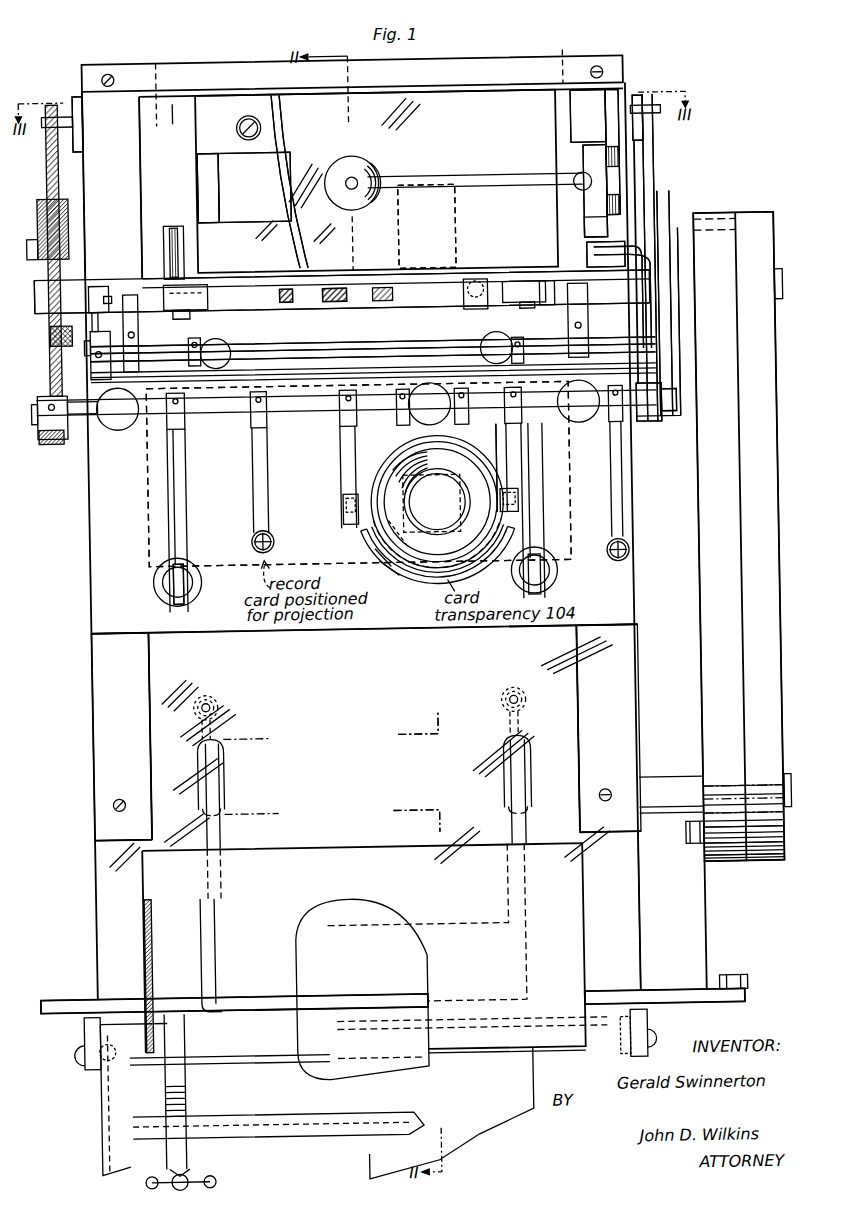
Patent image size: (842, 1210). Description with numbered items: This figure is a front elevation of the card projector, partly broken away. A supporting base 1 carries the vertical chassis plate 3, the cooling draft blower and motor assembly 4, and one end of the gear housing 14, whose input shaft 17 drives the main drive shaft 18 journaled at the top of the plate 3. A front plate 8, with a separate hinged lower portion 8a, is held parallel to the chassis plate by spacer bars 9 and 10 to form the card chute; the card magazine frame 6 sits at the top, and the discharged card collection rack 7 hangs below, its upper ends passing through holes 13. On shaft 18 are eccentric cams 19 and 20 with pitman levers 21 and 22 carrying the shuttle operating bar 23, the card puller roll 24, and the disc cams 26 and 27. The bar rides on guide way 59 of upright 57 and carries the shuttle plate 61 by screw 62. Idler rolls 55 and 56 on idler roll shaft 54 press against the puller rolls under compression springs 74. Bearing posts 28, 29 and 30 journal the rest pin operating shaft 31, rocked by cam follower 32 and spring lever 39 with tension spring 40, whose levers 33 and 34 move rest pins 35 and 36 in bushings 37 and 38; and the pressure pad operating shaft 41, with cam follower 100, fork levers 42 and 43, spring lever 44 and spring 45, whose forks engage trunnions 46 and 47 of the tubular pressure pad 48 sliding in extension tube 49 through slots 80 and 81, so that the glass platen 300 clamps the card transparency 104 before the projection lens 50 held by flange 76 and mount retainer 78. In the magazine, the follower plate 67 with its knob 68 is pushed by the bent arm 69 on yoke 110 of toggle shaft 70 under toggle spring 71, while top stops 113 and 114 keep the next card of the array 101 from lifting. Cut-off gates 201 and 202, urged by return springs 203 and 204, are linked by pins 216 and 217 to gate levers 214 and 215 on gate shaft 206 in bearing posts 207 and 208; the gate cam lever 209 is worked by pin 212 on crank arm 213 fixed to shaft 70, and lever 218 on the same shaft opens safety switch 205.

The supporting base 1 is at (668, 994).
The vertical chassis plate 3 is at (263, 266).
The cooling draft blower and motor assembly 4 is at (258, 1099).
The card magazine frame 6 is at (148, 124).
The card collection rack 7 is at (396, 838).
The front plate 8 is at (309, 335).
The front plate lower portion 8a is at (282, 630).
The spacer bar 9 is at (100, 654).
The spacer bar 10 is at (630, 662).
The holes 13 is at (528, 757).
The gear housing 14 is at (760, 866).
The input shaft 17 is at (665, 782).
The main drive shaft 18 is at (40, 282).
The eccentric cam 19 is at (44, 228).
The eccentric cam 20 is at (648, 220).
The pitman lever 21 is at (54, 162).
The pitman lever 22 is at (662, 132).
The shuttle operating bar 23 is at (650, 100).
The card puller roll 24 is at (190, 240).
The card rest pin control cam 26 is at (55, 330).
The pressure pad control cam 27 is at (668, 326).
The bearing post 28 is at (120, 425).
The bearing post 29 is at (417, 390).
The bearing post 30 is at (580, 425).
The card rest pin operating shaft 31 is at (302, 400).
The rest pin cam follower 32 is at (44, 392).
The pin operating lever 33 is at (185, 487).
The pin operating lever 34 is at (545, 514).
The card rest pin 35 is at (200, 580).
The card rest pin 36 is at (522, 580).
The pin bushing 37 is at (156, 580).
The pin bushing 38 is at (558, 580).
The rest pin closing spring lever 39 is at (266, 488).
The rest pin closing tension spring 40 is at (275, 536).
The pressure pad operating shaft 41 is at (484, 400).
The pressure pad fork lever 42 is at (358, 430).
The pressure pad fork lever 43 is at (509, 428).
The pressure pad closing spring lever 44 is at (613, 483).
The pressure pad closing tension spring 45 is at (608, 551).
The pressure pad stud 46 is at (402, 462).
The pressure pad stud 47 is at (503, 462).
The pressure pad 48 is at (447, 438).
The extension tube 49 is at (432, 442).
The projection lens 50 is at (380, 546).
The idler roll shaft 54 is at (362, 296).
The card puller idler roll 55 is at (195, 313).
The card puller idler roll 56 is at (530, 305).
The upright 57 is at (185, 108).
The shuttle guide way 59 is at (222, 190).
The shuttle plate 61 is at (270, 150).
The screw 62 is at (251, 118).
The magazine follower plate 67 is at (283, 160).
The knob 68 is at (372, 165).
The card advancing arm 69 is at (498, 176).
The toggle crank shaft 70 is at (614, 111).
The toggle spring 71 is at (591, 165).
The idler roll compression spring 74 is at (442, 297).
The beveled flange 76 is at (415, 555).
The mount retainer 78 is at (380, 577).
The slot 80 is at (352, 493).
The slot 81 is at (512, 520).
The pressure pad cam follower 100 is at (665, 390).
The card array 101 is at (240, 187).
The card transparency 104 is at (462, 205).
The yoke 110 is at (630, 165).
The top stop 113 is at (160, 72).
The top stop 114 is at (572, 70).
The chute cut-off gate 201 is at (180, 288).
The chute cut-off gate 202 is at (560, 270).
The gate return spring 203 is at (143, 343).
The gate return spring 204 is at (528, 345).
The safety switch 205 is at (104, 281).
The gate shaft 206 is at (371, 350).
The bearing post 207 is at (228, 342).
The bearing post 208 is at (487, 338).
The gate cam lever 209 is at (652, 316).
The gate cam lever operating pin 212 is at (603, 243).
The crank arm 213 is at (593, 252).
The gate lever 214 is at (143, 316).
The gate lever 215 is at (540, 308).
The linking pin 216 is at (113, 291).
The linking pin 217 is at (593, 300).
The safety switch operating lever 218 is at (76, 366).
The glass platen 300 is at (364, 534).